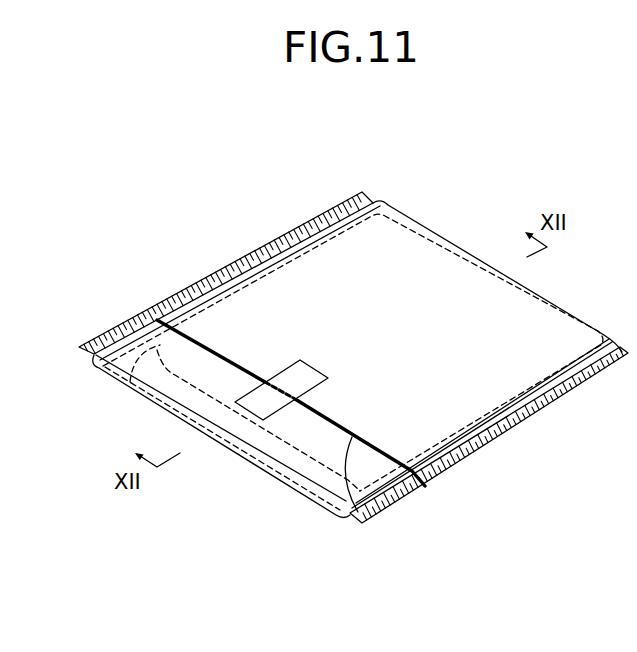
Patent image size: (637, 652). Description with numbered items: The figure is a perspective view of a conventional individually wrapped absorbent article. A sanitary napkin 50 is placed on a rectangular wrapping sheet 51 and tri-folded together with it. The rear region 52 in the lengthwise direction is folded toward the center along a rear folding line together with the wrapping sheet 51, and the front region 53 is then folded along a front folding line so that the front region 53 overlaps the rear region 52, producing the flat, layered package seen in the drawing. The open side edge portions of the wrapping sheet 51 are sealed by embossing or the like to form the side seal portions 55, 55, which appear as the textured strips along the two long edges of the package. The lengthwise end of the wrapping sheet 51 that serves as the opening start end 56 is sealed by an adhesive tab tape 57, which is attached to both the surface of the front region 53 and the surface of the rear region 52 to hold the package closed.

The sanitary napkin 50 is at (447, 235).
The wrapping sheet 51 is at (300, 492).
The rear region 52 is at (110, 330).
The front region 53 is at (290, 287).
The side seal portions 55 is at (154, 350).
The opening start end 56 is at (381, 513).
The adhesive tab tape 57 is at (240, 403).